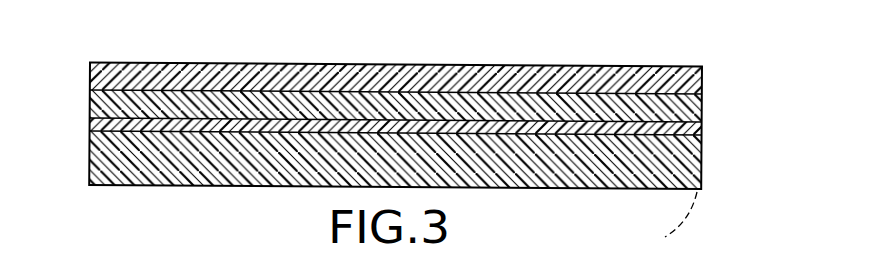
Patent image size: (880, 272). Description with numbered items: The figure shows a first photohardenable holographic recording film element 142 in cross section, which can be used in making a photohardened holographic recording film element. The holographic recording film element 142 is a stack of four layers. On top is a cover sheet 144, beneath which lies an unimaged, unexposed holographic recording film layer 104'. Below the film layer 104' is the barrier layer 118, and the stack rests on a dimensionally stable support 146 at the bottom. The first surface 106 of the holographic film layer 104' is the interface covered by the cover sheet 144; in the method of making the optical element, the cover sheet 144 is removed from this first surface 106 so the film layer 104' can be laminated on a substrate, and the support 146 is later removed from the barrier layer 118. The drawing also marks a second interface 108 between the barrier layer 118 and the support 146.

The holographic recording film element 142 is at (623, 61).
The cover sheet 144 is at (703, 80).
The holographic recording film layer 104' is at (431, 106).
The barrier layer 118 is at (703, 128).
The dimensionally stable support 146 is at (703, 164).
The first surface 106 is at (117, 90).
The second interface 108 is at (97, 132).